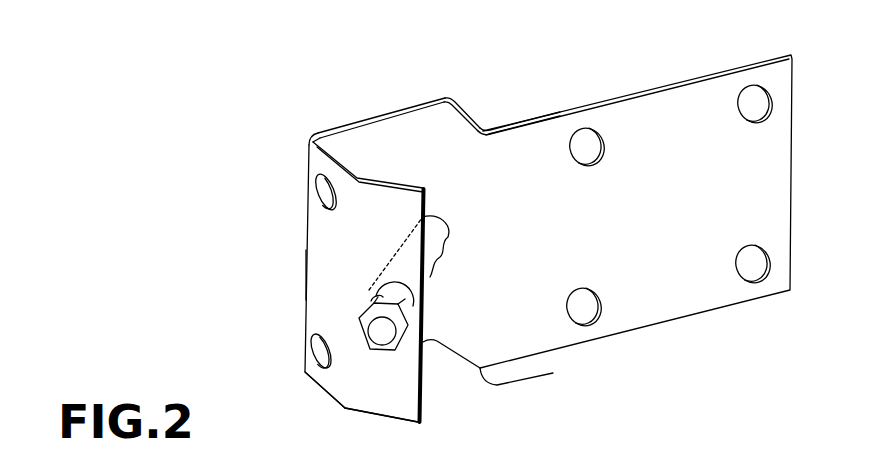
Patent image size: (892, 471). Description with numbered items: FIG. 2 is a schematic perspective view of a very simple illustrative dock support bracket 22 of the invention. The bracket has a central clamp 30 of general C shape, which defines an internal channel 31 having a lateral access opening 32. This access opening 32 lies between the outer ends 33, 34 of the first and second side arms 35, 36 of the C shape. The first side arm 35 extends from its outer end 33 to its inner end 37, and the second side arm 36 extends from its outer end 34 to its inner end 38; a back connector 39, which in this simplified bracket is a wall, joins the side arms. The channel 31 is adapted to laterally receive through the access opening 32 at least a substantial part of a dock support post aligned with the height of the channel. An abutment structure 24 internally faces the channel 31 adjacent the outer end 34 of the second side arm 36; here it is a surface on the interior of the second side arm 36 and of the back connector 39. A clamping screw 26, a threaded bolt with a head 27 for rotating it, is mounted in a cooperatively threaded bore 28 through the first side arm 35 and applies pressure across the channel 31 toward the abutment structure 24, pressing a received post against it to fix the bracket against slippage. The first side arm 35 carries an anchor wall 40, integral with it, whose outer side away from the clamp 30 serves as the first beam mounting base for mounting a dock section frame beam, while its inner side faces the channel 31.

The dock support bracket 22 is at (631, 72).
The abutment structure 24 is at (463, 137).
The clamping screw 26 is at (443, 236).
The head 27 is at (374, 338).
The threaded bore 28 is at (373, 302).
The central clamp 30 is at (415, 84).
The internal channel 31 is at (385, 156).
The lateral access opening 32 is at (463, 391).
The outer end of first side arm 33 is at (419, 402).
The outer end of second side arm 34 is at (483, 136).
The first side arm 35 is at (323, 395).
The second side arm 36 is at (482, 123).
The inner end of first side arm 37 is at (309, 138).
The inner end of second side arm 38 is at (447, 99).
The back connector 39 is at (400, 111).
The anchor wall 40 is at (330, 247).